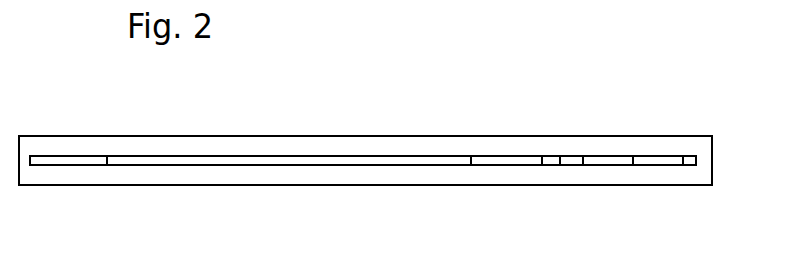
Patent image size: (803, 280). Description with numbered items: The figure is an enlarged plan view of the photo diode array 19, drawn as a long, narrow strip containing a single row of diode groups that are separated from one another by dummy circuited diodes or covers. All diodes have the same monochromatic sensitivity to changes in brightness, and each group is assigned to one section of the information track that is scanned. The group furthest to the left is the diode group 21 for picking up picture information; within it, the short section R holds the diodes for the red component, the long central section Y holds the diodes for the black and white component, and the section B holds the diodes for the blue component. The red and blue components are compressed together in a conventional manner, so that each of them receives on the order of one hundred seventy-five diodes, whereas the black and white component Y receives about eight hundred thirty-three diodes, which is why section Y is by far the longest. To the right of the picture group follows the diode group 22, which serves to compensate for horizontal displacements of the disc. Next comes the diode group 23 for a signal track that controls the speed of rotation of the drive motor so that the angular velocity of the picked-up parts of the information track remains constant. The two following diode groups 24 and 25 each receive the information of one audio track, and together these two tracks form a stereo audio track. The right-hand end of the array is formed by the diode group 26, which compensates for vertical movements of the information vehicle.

The photo diode array 19 is at (122, 114).
The diode group for picture information 21 is at (363, 127).
The red component R is at (80, 193).
The black and white component Y is at (379, 192).
The blue component B is at (519, 192).
The diode group for horizontal compensation 22 is at (549, 156).
The diode group for signal track 23 is at (571, 156).
The diode group for first audio track 24 is at (604, 156).
The diode group for second audio track 25 is at (656, 156).
The diode group for vertical compensation 26 is at (691, 156).